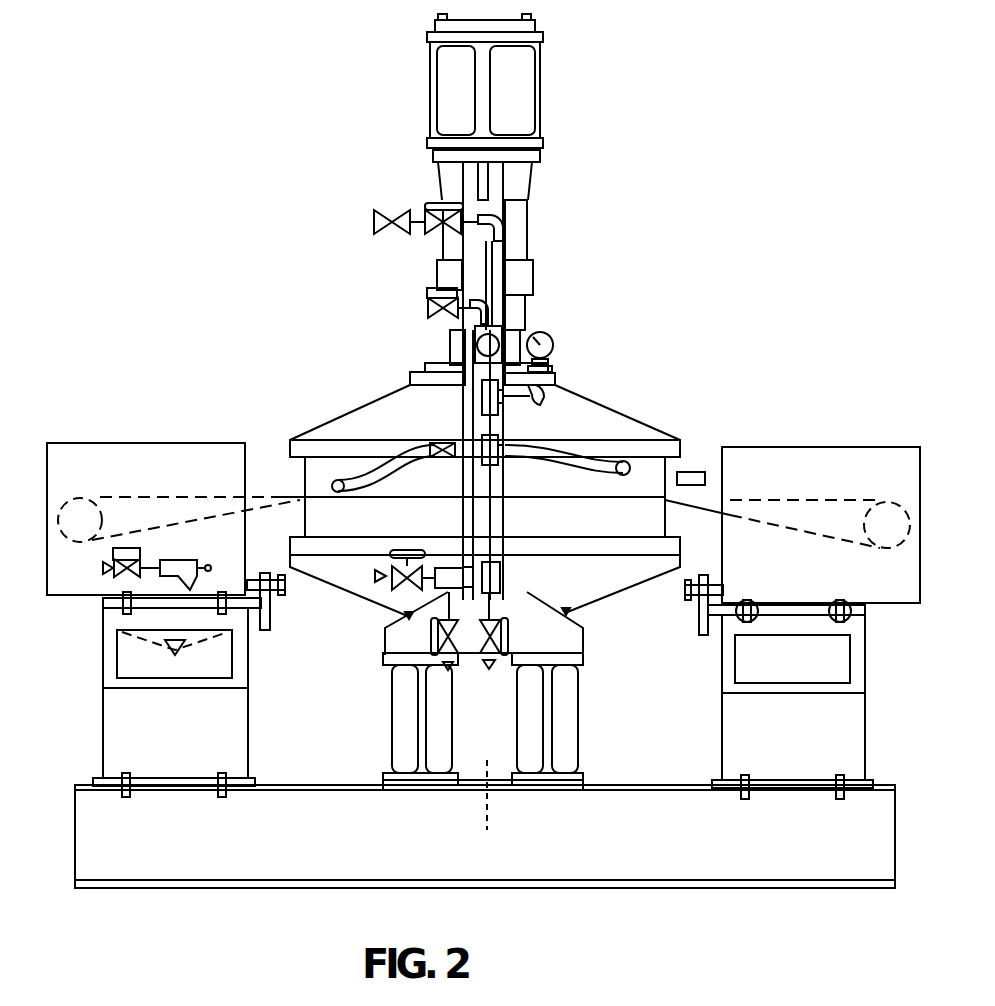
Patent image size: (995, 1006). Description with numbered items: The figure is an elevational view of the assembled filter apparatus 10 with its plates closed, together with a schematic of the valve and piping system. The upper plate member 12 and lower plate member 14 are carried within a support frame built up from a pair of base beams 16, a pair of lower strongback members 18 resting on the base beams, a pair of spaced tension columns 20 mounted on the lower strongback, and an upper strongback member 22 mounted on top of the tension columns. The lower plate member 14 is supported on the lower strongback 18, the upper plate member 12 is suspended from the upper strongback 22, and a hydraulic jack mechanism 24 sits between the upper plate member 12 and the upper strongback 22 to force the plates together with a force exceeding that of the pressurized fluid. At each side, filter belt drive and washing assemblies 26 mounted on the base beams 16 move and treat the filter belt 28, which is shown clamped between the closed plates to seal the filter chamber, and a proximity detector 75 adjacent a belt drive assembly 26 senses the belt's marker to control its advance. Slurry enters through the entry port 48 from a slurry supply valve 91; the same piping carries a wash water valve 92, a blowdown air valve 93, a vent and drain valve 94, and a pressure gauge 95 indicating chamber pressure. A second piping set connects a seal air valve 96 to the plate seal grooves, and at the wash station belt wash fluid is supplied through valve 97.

The filter apparatus 10 is at (345, 333).
The upper plate member 12 is at (630, 375).
The lower plate member 14 is at (612, 608).
The base beams 16 is at (487, 804).
The lower strongback members 18 is at (400, 712).
The tension columns 20 is at (508, 298).
The upper strongback member 22 is at (528, 102).
The hydraulic jack mechanism 24 is at (522, 268).
The filter belt drive and washing assemblies 26 is at (120, 443).
The filter belt 28 is at (300, 497).
The entry port 48 is at (605, 458).
The proximity detector 75 is at (688, 470).
The slurry supply valve 91 is at (395, 582).
The wash water valve 92 is at (438, 648).
The blowdown air valve 93 is at (440, 205).
The vent and drain valve 94 is at (506, 645).
The pressure gauge 95 is at (552, 344).
The seal air valve 96 is at (428, 302).
The belt wash fluid valve 97 is at (150, 560).